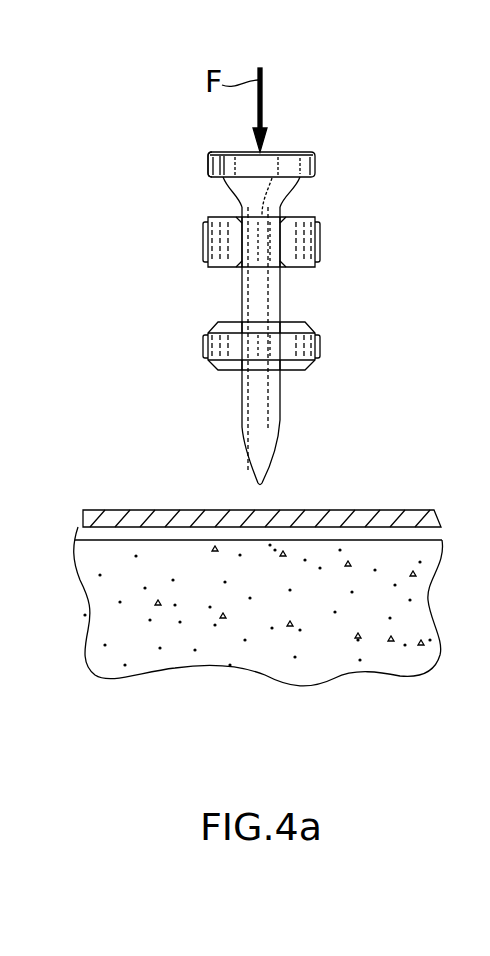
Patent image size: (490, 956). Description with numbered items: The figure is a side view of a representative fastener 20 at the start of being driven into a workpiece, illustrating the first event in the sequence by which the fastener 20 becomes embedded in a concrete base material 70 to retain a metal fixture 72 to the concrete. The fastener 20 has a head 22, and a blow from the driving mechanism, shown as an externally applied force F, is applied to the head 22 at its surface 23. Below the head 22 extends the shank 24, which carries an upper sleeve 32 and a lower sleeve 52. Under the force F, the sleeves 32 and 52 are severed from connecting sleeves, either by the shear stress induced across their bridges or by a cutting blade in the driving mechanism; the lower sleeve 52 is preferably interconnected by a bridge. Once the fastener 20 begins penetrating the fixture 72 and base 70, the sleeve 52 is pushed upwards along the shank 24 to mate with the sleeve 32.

The fastener 20 is at (324, 163).
The head 22 is at (197, 167).
The surface 23 is at (222, 151).
The shank 24 is at (302, 293).
The sleeve 32 is at (334, 240).
The sleeve 52 is at (334, 345).
The concrete base material 70 is at (415, 612).
The metal fixture 72 is at (385, 510).